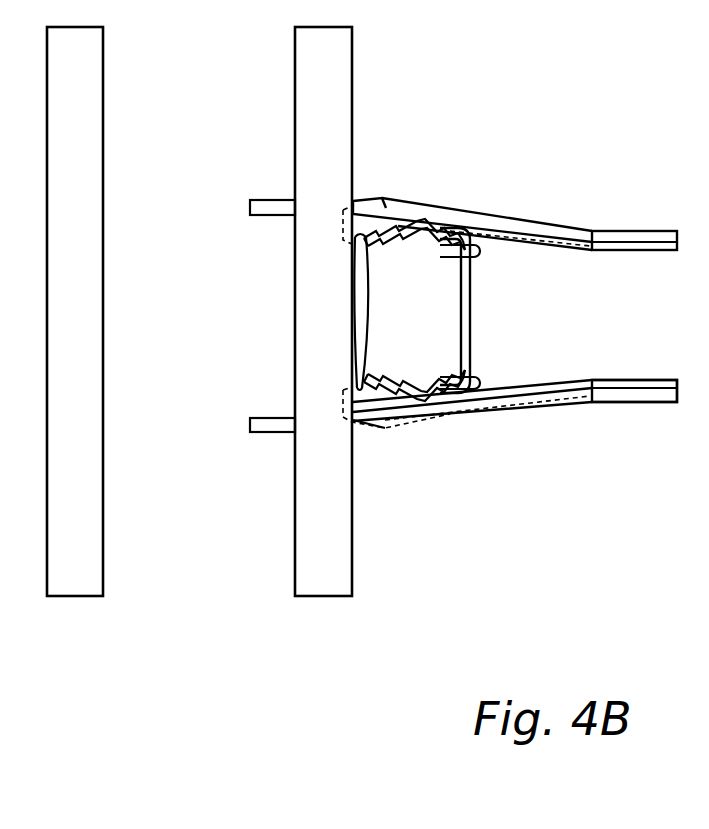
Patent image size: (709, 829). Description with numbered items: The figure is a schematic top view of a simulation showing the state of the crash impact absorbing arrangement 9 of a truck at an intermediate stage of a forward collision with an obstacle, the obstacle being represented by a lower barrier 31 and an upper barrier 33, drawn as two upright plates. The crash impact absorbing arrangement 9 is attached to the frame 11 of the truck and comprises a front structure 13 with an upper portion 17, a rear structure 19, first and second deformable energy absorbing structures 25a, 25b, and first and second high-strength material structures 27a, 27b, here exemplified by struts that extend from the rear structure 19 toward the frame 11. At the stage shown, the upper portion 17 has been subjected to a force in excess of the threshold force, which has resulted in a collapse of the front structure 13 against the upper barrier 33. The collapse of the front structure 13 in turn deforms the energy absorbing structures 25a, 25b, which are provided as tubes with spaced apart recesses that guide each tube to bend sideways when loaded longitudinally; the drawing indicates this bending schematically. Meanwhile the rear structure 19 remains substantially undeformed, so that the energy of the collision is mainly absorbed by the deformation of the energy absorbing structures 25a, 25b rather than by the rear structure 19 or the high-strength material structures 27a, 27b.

The crash impact absorbing arrangement 9 is at (493, 145).
The frame 11 is at (640, 400).
The front structure 13 is at (373, 393).
The upper portion 17 is at (372, 306).
The rear structure 19 is at (476, 343).
The first deformable energy absorbing structure 25a is at (385, 238).
The second deformable energy absorbing structure 25b is at (422, 400).
The first high-strength material structure 27a is at (512, 243).
The second high-strength material structure 27b is at (497, 388).
The lower barrier 31 is at (70, 580).
The upper barrier 33 is at (323, 587).